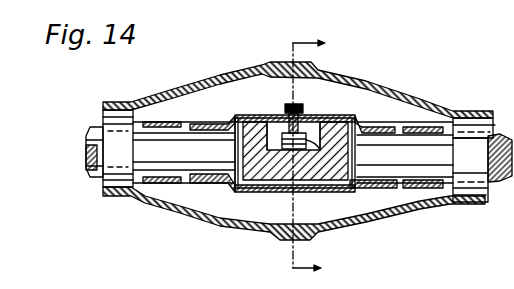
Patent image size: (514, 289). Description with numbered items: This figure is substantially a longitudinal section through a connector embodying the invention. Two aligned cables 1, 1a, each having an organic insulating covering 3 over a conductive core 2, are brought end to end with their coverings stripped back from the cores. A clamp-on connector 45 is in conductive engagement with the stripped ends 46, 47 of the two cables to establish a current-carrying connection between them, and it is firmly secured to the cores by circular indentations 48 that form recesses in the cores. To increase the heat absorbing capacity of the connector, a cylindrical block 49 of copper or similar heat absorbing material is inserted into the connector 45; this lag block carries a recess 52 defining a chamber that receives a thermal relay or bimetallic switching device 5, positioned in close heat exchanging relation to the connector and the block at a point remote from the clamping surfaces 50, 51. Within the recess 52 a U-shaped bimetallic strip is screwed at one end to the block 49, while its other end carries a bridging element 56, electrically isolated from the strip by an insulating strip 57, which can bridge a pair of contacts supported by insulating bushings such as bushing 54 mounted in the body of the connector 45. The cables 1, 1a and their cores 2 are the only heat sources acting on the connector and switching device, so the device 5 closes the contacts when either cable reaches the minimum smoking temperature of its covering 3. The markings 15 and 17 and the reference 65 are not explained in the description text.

The cable 1 is at (89, 83).
The cable 1a is at (513, 79).
The core 2 is at (87, 163).
The covering 3 is at (103, 117).
The bimetallic switching device 5 is at (331, 111).
The section line 15 is at (309, 154).
The section line 17 is at (185, 283).
The clamp-on connector 45 is at (214, 184).
The stripped end 46 is at (184, 139).
The stripped end 47 is at (377, 136).
The circular indentation 48 is at (190, 178).
The cylindrical block 49 is at (262, 178).
The clamping surface 50 is at (152, 188).
The clamping surface 51 is at (433, 192).
The recess 52 is at (275, 121).
The insulating bushing 54 is at (297, 112).
The bridging element 56 is at (262, 118).
The insulating strip 57 is at (330, 126).
The terminal 65 is at (322, 147).